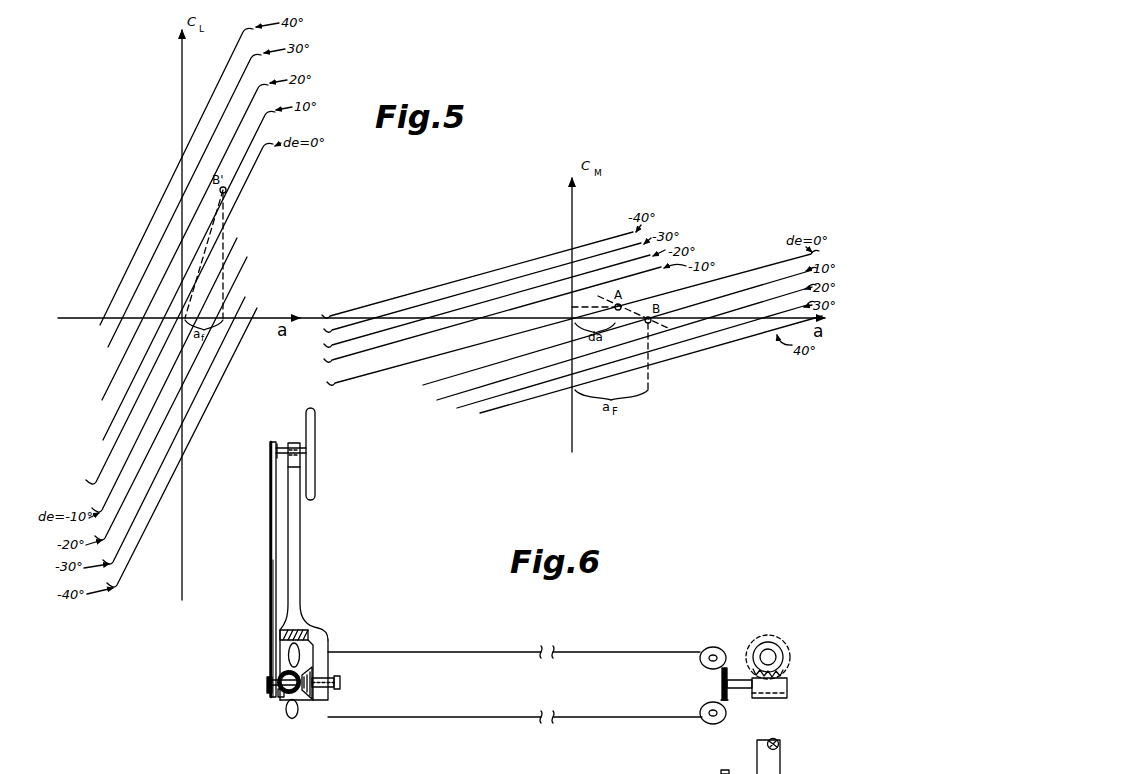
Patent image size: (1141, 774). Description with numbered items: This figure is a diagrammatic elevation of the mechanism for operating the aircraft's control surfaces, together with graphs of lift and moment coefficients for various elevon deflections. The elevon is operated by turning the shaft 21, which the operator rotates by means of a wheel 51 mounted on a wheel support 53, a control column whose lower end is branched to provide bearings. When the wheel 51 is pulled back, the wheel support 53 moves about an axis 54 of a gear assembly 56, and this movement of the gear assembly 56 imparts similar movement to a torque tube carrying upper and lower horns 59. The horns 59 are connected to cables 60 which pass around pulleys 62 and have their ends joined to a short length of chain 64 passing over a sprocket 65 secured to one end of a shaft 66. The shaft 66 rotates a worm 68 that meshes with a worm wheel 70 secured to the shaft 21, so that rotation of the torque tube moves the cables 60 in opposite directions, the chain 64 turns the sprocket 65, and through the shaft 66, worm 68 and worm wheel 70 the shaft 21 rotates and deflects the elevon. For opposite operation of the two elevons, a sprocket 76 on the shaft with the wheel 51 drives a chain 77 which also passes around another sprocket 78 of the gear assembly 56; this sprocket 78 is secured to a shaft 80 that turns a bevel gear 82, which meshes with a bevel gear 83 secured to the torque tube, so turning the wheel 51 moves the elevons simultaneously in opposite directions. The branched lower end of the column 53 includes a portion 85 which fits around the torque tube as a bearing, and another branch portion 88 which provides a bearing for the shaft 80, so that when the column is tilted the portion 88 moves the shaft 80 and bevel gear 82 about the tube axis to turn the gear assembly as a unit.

The shaft 21 is at (768, 643).
The wheel 51 is at (315, 423).
The wheel support 53 is at (296, 536).
The axis 54 is at (282, 702).
The gear assembly 56 is at (307, 710).
The horns 59 is at (290, 652).
The cables 60 is at (480, 652).
The pulleys 62 is at (701, 661).
The chain 64 is at (722, 673).
The sprocket 65 is at (730, 699).
The shaft 66 is at (745, 689).
The worm 68 is at (784, 698).
The worm wheel 70 is at (789, 664).
The sprocket 76 is at (270, 462).
The chain 77 is at (270, 576).
The sprocket 78 is at (267, 684).
The shaft 80 is at (278, 692).
The bevel gear 82 is at (312, 679).
The bevel gear 83 is at (282, 706).
The portion 85 is at (310, 641).
The branch portion 88 is at (328, 656).